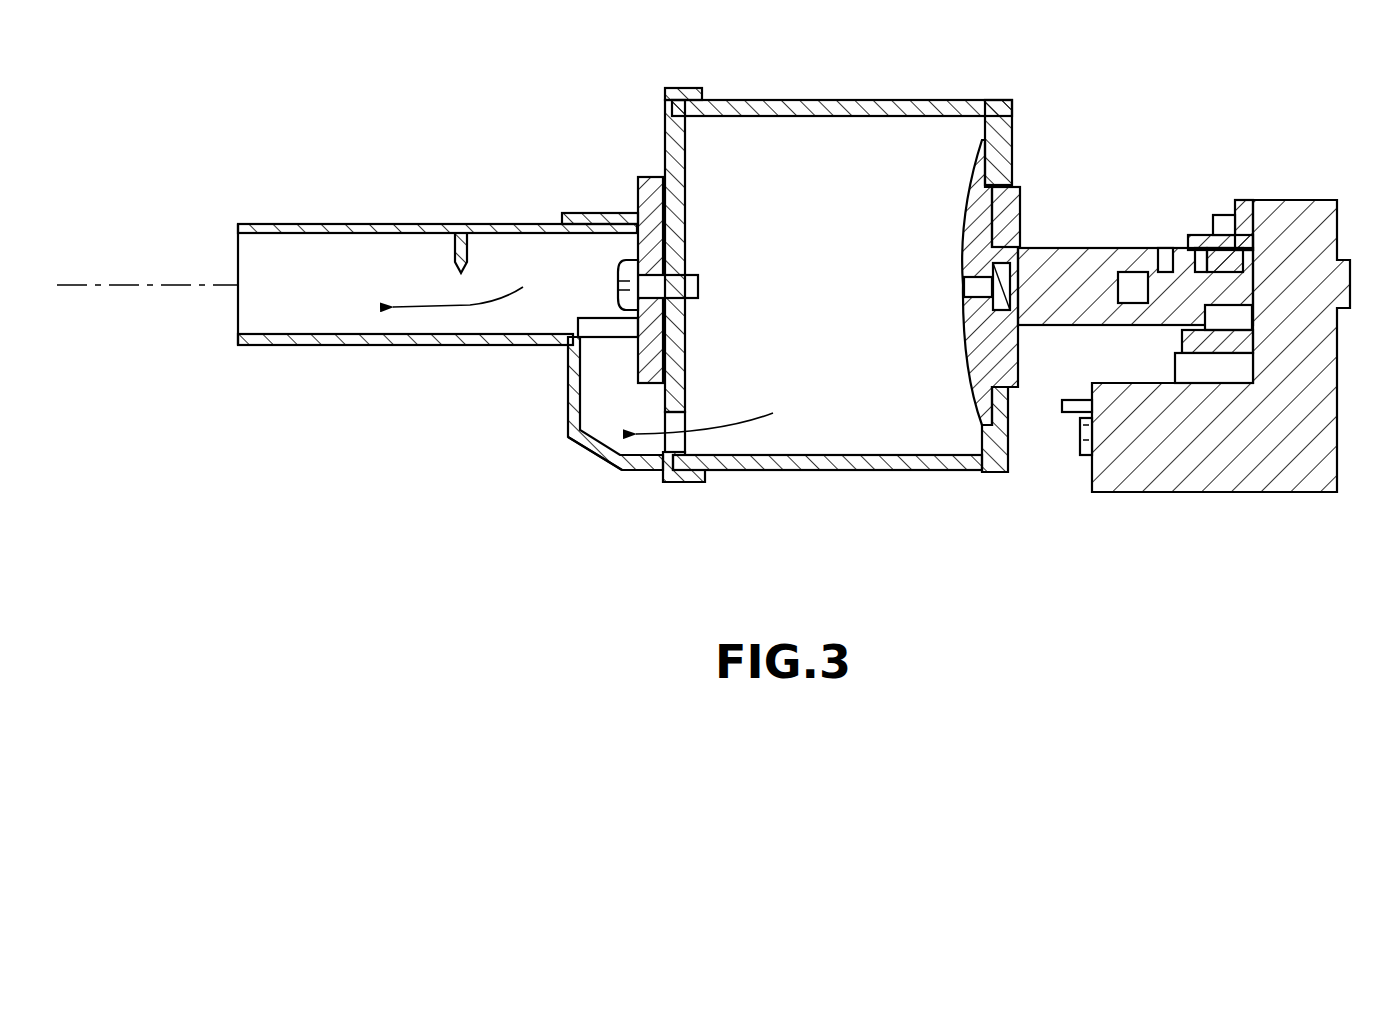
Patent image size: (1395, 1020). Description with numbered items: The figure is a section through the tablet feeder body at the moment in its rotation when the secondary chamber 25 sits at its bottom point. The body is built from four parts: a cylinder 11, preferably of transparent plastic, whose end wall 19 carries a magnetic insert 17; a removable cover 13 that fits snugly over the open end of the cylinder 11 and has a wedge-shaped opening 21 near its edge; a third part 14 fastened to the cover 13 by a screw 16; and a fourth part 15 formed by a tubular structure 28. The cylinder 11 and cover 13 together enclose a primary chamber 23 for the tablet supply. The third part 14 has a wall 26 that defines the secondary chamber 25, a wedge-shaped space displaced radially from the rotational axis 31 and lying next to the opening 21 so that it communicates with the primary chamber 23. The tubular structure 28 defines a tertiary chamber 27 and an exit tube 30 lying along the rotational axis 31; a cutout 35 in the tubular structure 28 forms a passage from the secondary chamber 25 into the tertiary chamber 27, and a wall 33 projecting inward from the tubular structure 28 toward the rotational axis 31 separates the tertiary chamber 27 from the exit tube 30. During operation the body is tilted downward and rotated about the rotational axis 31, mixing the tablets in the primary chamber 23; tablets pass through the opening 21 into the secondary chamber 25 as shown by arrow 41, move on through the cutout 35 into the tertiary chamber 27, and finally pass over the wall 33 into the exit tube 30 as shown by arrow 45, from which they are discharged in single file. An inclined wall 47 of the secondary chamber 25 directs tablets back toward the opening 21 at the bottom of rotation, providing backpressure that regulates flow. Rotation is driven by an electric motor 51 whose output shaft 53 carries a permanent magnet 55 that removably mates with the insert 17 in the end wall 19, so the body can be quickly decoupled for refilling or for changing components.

The cylinder 11 is at (860, 470).
The removable cover 13 is at (640, 470).
The third part 14 is at (655, 173).
The fourth part 15 is at (437, 287).
The screw 16 is at (692, 287).
The insert 17 is at (963, 223).
The end wall 19 is at (1000, 133).
The wedge-shaped opening 21 is at (668, 445).
The primary chamber 23 is at (808, 163).
The secondary chamber 25 is at (633, 402).
The wall 26 is at (568, 390).
The tertiary chamber 27 is at (565, 250).
The tubular structure 28 is at (360, 345).
The exit tube 30 is at (280, 245).
The rotational axis 31 is at (118, 296).
The wall 33 is at (470, 248).
The cutout 35 is at (603, 330).
The arrow 41 is at (740, 456).
The arrow 45 is at (493, 300).
The wall 47 is at (587, 438).
The electric motor 51 is at (1300, 200).
The output shaft 53 is at (1100, 248).
The permanent magnet 55 is at (1005, 213).